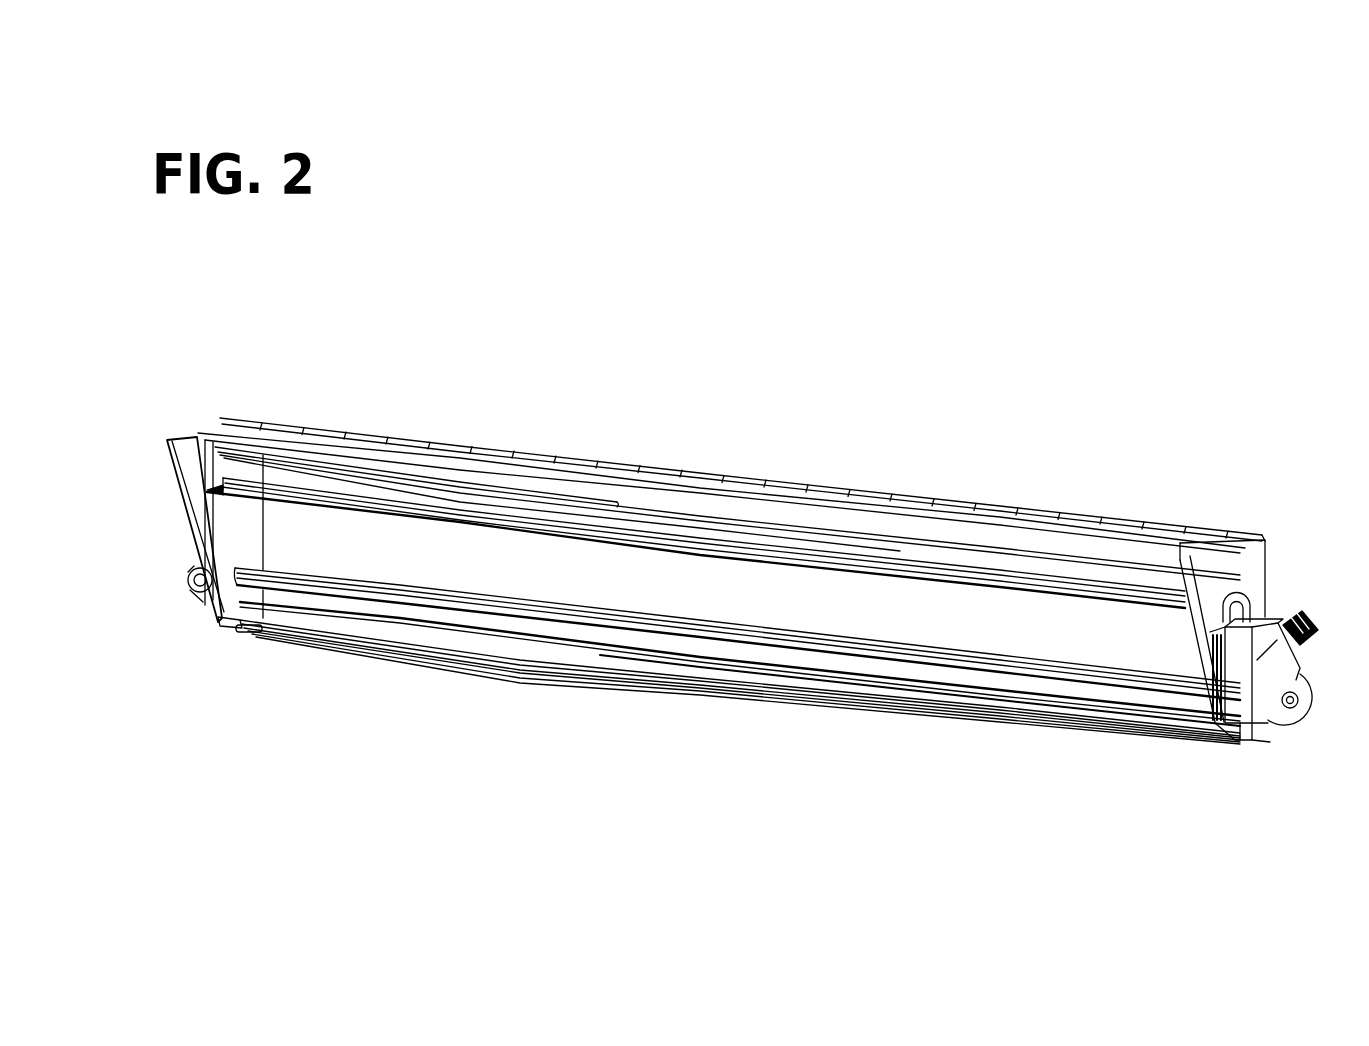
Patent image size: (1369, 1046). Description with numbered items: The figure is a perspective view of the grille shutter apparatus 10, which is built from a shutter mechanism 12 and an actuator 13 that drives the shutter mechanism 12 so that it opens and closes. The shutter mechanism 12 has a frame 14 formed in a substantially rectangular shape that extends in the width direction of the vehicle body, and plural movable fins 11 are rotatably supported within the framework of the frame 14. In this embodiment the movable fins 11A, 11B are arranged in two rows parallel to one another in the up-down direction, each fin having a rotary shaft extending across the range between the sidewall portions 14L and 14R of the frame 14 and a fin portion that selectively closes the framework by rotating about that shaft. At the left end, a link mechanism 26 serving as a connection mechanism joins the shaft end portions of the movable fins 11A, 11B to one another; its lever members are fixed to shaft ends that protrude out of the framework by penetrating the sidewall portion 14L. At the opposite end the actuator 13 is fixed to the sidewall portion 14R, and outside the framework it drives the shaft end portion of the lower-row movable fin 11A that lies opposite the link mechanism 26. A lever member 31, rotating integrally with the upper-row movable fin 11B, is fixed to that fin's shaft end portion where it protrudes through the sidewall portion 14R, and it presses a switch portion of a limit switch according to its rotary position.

The grille shutter apparatus 10 is at (243, 313).
The movable fins 11 is at (723, 558).
The movable fin (lower row) 11A is at (640, 722).
The movable fin (upper row) 11B is at (408, 386).
The shutter mechanism 12 is at (490, 572).
The actuator 13 is at (1305, 700).
The frame 14 is at (728, 485).
The sidewall portion 14L is at (183, 452).
The sidewall portion 14R is at (1237, 560).
The link mechanism 26 is at (190, 580).
The lever member 31 is at (1250, 610).